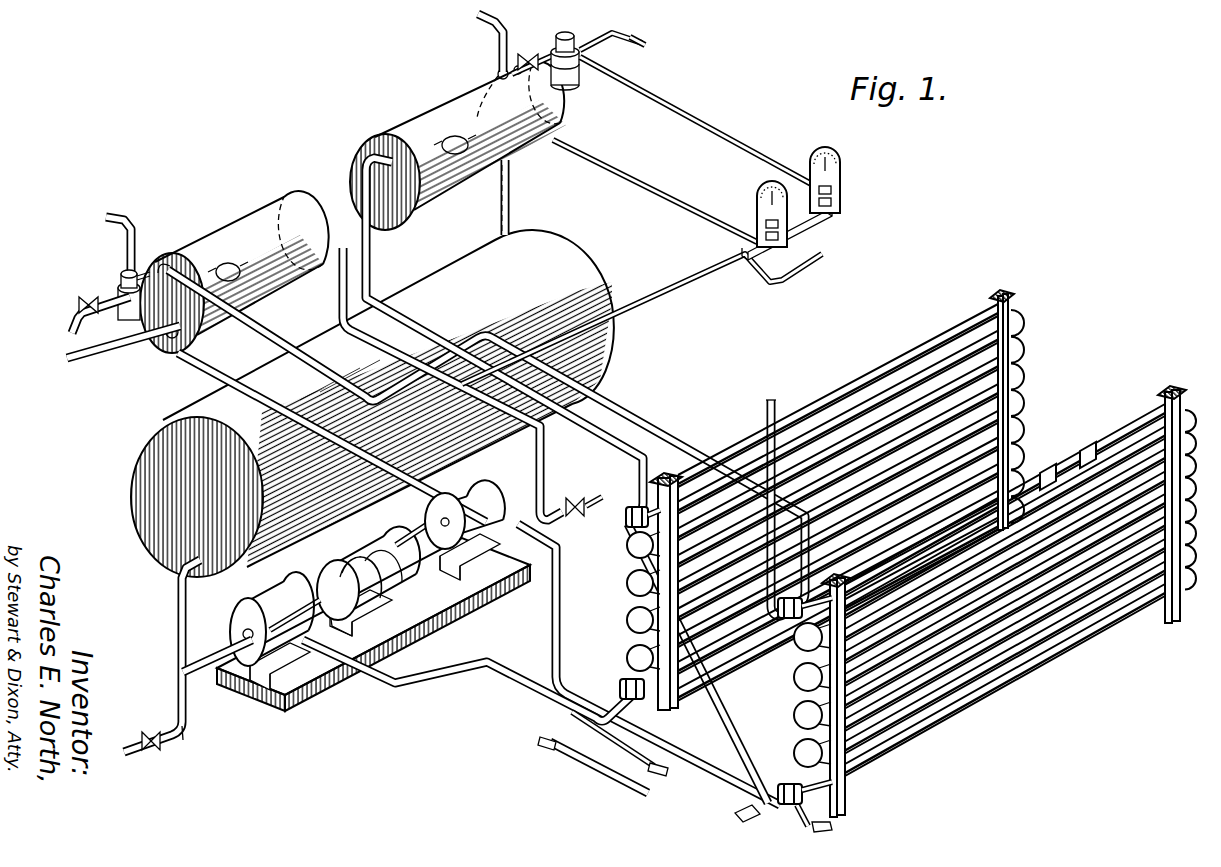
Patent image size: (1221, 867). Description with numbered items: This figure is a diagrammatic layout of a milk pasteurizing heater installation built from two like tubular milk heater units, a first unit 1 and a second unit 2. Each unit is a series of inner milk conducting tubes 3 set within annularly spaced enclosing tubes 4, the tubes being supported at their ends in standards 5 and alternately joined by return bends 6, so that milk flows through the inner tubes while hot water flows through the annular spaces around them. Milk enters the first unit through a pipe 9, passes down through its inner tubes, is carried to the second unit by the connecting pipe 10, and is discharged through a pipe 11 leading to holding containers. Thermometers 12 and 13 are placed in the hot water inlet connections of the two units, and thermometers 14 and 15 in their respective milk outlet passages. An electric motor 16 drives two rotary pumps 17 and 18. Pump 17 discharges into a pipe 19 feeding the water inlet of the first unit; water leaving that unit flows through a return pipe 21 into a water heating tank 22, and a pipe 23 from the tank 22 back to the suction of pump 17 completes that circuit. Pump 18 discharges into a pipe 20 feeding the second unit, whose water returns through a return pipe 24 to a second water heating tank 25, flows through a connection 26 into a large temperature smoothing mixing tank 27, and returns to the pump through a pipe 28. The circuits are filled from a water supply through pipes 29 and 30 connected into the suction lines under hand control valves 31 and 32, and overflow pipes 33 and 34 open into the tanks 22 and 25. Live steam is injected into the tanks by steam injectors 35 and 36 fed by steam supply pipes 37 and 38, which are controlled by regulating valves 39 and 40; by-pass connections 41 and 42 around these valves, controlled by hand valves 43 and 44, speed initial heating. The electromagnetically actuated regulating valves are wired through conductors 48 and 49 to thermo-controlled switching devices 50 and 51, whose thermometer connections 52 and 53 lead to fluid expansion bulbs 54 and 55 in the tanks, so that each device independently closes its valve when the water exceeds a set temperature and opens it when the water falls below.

The first heater unit 1 is at (1118, 416).
The second heater unit 2 is at (919, 553).
The milk conducting tubes 3 is at (1084, 462).
The enclosing tubes 4 is at (924, 352).
The standards 5 is at (1186, 442).
The return bends 6 is at (1024, 352).
The milk inlet pipe 9 is at (778, 402).
The connecting pipe 10 is at (746, 746).
The milk discharge pipe 11 is at (628, 778).
The thermometer 12 is at (834, 826).
The thermometer 13 is at (664, 776).
The thermometer 14 is at (734, 814).
The thermometer 15 is at (538, 744).
The electric motor 16 is at (378, 538).
The rotary pump 17 is at (482, 494).
The rotary pump 18 is at (274, 600).
The water inlet pipe 19 is at (562, 634).
The water inlet pipe 20 is at (500, 690).
The return pipe 21 is at (280, 350).
The water heating tank 22 is at (244, 208).
The pump suction pipe 23 is at (380, 350).
The return pipe 24 is at (376, 258).
The water heating tank 25 is at (426, 102).
The connection 26 is at (518, 212).
The mixing tank 27 is at (596, 272).
The pump suction pipe 28 is at (176, 654).
The water filling pipe 29 is at (596, 504).
The water filling pipe 30 is at (186, 738).
The hand control valve 31 is at (574, 518).
The hand control valve 32 is at (152, 754).
The overflow pipe 33 is at (130, 218).
The overflow pipe 34 is at (476, 18).
The steam injector 35 is at (236, 264).
The steam injector 36 is at (442, 136).
The steam supply pipe 37 is at (70, 362).
The steam supply pipe 38 is at (644, 48).
The regulating valve 39 is at (118, 280).
The regulating valve 40 is at (600, 44).
The by-pass connection 41 is at (70, 330).
The by-pass connection 42 is at (565, 34).
The hand valve 43 is at (84, 298).
The hand valve 44 is at (527, 55).
The conductor 48 is at (540, 326).
The conductor 49 is at (718, 130).
The thermo-controlled electric switching device 50 is at (756, 200).
The thermo-controlled electric switching device 51 is at (842, 182).
The thermometer connection 52 is at (662, 298).
The thermometer connection 53 is at (808, 252).
The fluid expansion bulb 54 is at (171, 340).
The fluid expansion bulb 55 is at (538, 160).